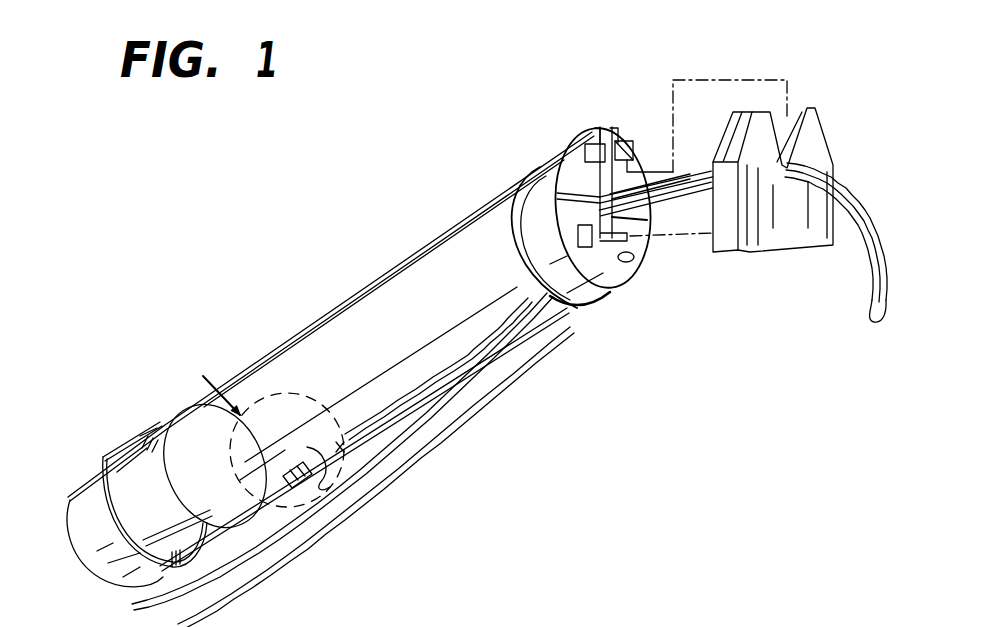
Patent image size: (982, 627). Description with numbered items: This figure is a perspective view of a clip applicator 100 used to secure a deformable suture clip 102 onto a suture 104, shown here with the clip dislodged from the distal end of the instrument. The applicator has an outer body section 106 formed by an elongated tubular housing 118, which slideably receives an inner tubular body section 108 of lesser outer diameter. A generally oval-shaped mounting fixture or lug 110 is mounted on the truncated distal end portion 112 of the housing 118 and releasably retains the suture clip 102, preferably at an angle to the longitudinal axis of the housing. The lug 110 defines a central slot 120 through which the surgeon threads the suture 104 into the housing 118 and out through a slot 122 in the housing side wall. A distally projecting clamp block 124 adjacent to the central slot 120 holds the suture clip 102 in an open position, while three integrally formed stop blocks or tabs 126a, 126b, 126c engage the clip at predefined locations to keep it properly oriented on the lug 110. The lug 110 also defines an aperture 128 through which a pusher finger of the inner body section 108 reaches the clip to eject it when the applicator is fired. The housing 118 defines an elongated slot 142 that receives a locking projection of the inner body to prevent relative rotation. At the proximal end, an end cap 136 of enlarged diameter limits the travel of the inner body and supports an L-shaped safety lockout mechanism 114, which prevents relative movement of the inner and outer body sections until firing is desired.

The clip applicator 100 is at (180, 250).
The suture clip 102 is at (838, 140).
The suture 104 is at (857, 317).
The outer body section 106 is at (293, 334).
The inner tubular body section 108 is at (133, 500).
The lug 110 is at (575, 195).
The truncated distal end portion 112 is at (592, 303).
The safety lockout mechanism 114 is at (147, 440).
The tubular housing 118 is at (396, 324).
The central slot 120 is at (570, 207).
The slot 122 is at (512, 214).
The clamp block 124 is at (627, 240).
The stop block 126a is at (597, 128).
The stop block 126b is at (633, 140).
The stop block 126c is at (633, 253).
The aperture 128 is at (597, 248).
The end cap 136 is at (113, 563).
The elongated slot 142 is at (252, 464).